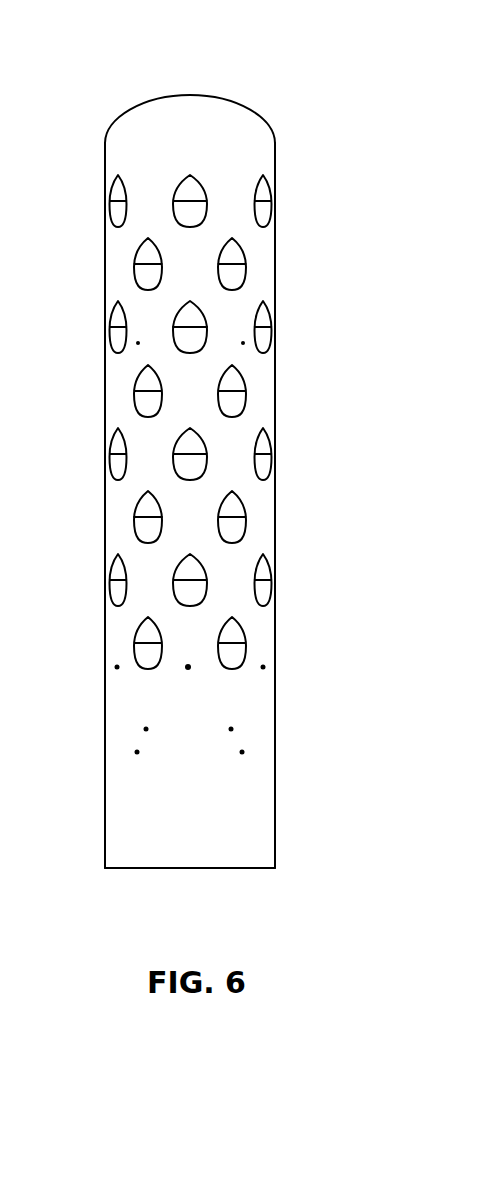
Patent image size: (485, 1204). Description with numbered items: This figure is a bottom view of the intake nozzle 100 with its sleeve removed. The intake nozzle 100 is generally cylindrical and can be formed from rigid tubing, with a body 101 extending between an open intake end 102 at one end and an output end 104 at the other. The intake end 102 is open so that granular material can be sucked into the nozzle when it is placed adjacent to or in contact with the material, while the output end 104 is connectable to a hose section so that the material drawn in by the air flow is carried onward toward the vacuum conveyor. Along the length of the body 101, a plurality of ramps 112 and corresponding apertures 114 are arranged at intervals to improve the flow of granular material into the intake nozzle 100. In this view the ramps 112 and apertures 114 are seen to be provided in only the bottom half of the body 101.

The intake nozzle 100 is at (295, 98).
The body 101 is at (238, 560).
The intake end 102 is at (158, 102).
The output end 104 is at (249, 868).
The ramp 112 is at (200, 313).
The aperture 114 is at (198, 340).